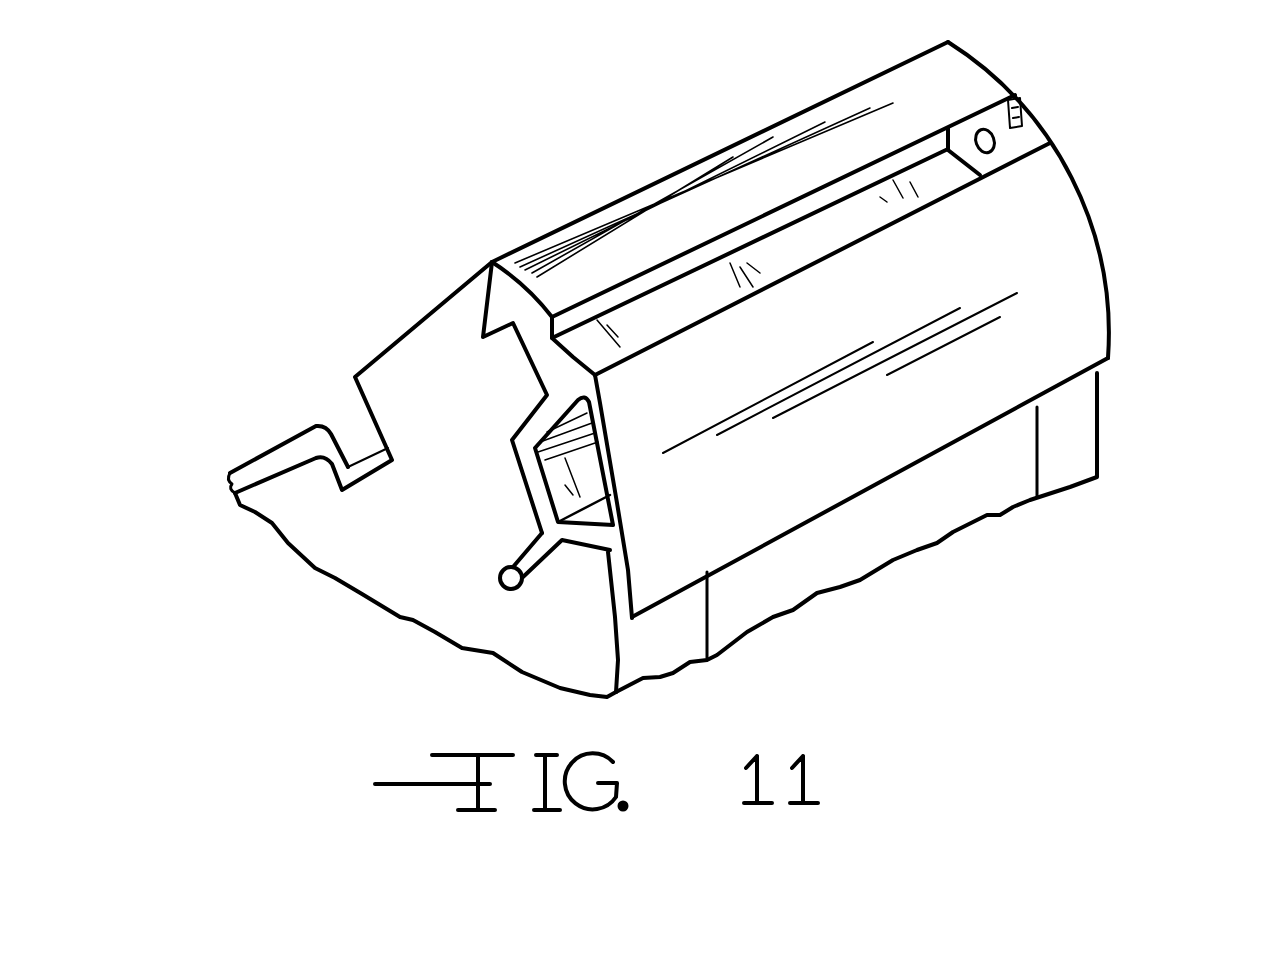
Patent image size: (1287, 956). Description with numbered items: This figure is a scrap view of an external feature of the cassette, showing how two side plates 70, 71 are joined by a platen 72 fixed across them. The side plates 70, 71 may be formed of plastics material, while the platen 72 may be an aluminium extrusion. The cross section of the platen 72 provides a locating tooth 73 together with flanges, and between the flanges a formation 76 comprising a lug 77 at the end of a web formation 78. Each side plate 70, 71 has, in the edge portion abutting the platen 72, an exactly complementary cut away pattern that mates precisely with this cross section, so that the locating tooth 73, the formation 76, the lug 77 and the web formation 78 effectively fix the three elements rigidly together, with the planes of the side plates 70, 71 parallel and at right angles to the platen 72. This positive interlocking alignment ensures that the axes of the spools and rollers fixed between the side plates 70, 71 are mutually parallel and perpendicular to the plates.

The side plate 70 is at (342, 552).
The side plate 71 is at (1085, 433).
The platen 72 is at (1050, 198).
The locating tooth 73 is at (497, 308).
The formation 76 is at (562, 367).
The lug 77 is at (503, 573).
The web formation 78 is at (580, 476).